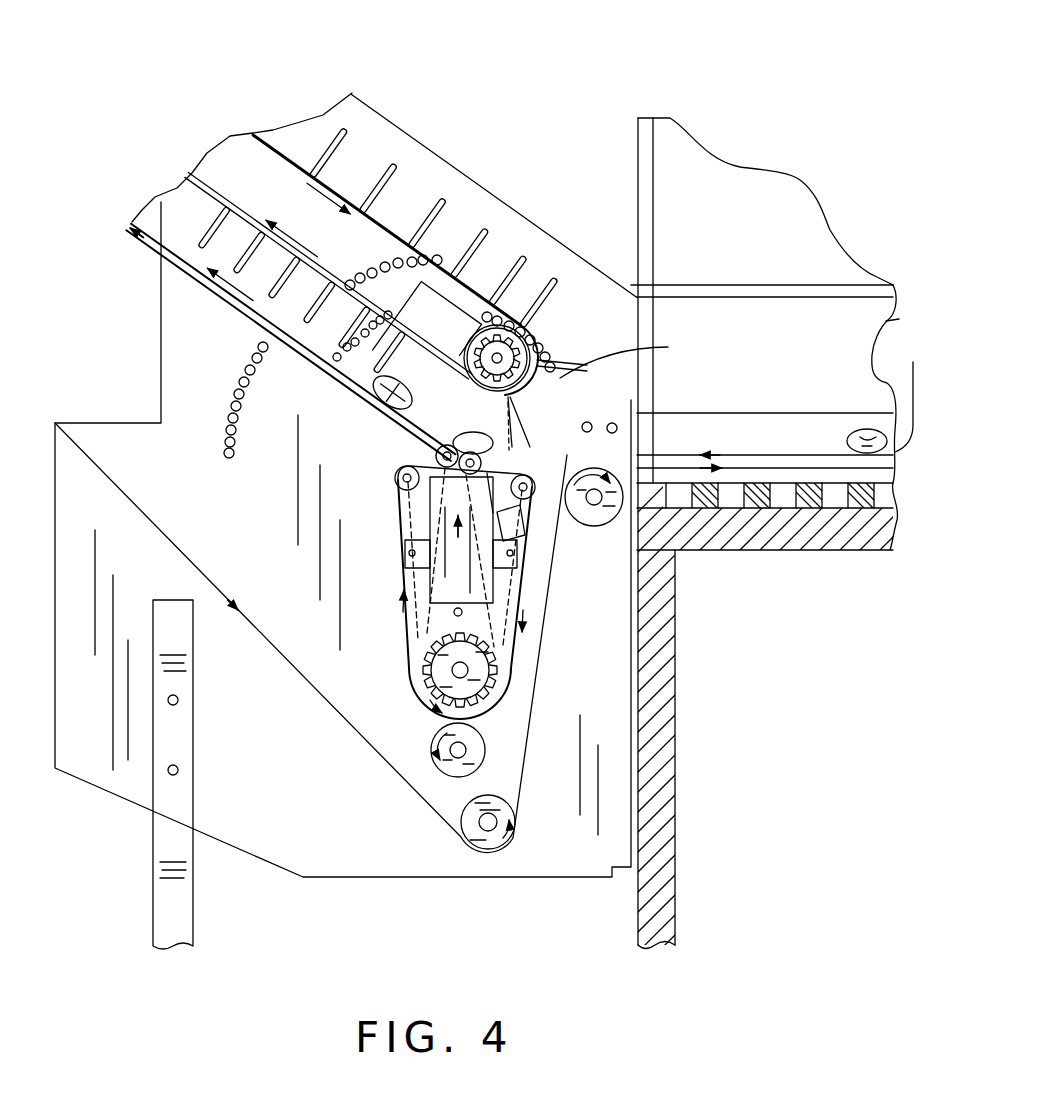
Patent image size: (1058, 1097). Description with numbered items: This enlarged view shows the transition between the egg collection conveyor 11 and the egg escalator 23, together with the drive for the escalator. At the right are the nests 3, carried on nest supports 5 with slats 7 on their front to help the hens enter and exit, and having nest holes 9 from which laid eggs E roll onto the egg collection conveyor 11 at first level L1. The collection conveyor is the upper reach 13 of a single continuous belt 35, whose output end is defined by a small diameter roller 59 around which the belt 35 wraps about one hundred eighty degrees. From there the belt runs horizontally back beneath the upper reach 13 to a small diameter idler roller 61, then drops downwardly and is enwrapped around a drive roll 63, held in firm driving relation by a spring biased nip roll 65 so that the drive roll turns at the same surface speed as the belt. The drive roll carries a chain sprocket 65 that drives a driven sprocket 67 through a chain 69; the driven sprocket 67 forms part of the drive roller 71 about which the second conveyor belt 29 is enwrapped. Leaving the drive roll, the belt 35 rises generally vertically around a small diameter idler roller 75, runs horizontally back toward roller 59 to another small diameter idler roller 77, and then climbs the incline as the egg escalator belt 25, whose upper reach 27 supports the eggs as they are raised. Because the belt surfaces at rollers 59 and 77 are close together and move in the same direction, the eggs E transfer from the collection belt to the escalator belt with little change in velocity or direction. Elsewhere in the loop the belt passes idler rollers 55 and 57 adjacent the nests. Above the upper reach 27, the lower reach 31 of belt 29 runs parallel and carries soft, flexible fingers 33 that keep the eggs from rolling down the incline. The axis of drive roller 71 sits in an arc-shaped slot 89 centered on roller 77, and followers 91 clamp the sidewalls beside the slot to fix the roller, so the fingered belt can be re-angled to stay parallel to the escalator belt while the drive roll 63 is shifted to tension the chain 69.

The nests 3 is at (629, 506).
The nest supports 5 is at (678, 735).
The slats 7 is at (808, 550).
The nest holes 9 is at (686, 176).
The egg collection conveyor 11 is at (787, 455).
The upper reach 13 is at (737, 455).
The egg escalator 23 is at (403, 247).
The egg escalator belt 25 is at (293, 339).
The upper reach 27 is at (302, 289).
The second conveyor belt 29 is at (432, 165).
The lower reach 31 is at (330, 273).
The fingers 33 is at (433, 228).
The belt 35 is at (128, 527).
The idler roller 55 is at (520, 837).
The idler roller 57 is at (590, 515).
The small diameter roller 59 is at (600, 422).
The small diameter idler roller 61 is at (560, 445).
The drive roll 63 is at (512, 770).
The chain sprocket 65 is at (475, 672).
The driven sprocket 67 is at (545, 345).
The chain 69 is at (430, 610).
The drive roller 71 is at (478, 330).
The small diameter idler roller 75 is at (397, 493).
The small diameter idler roller 77 is at (440, 452).
The arc-shaped slot 89 is at (427, 337).
The followers 91 is at (392, 392).
The eggs E is at (737, 380).
The first level L1 is at (910, 395).